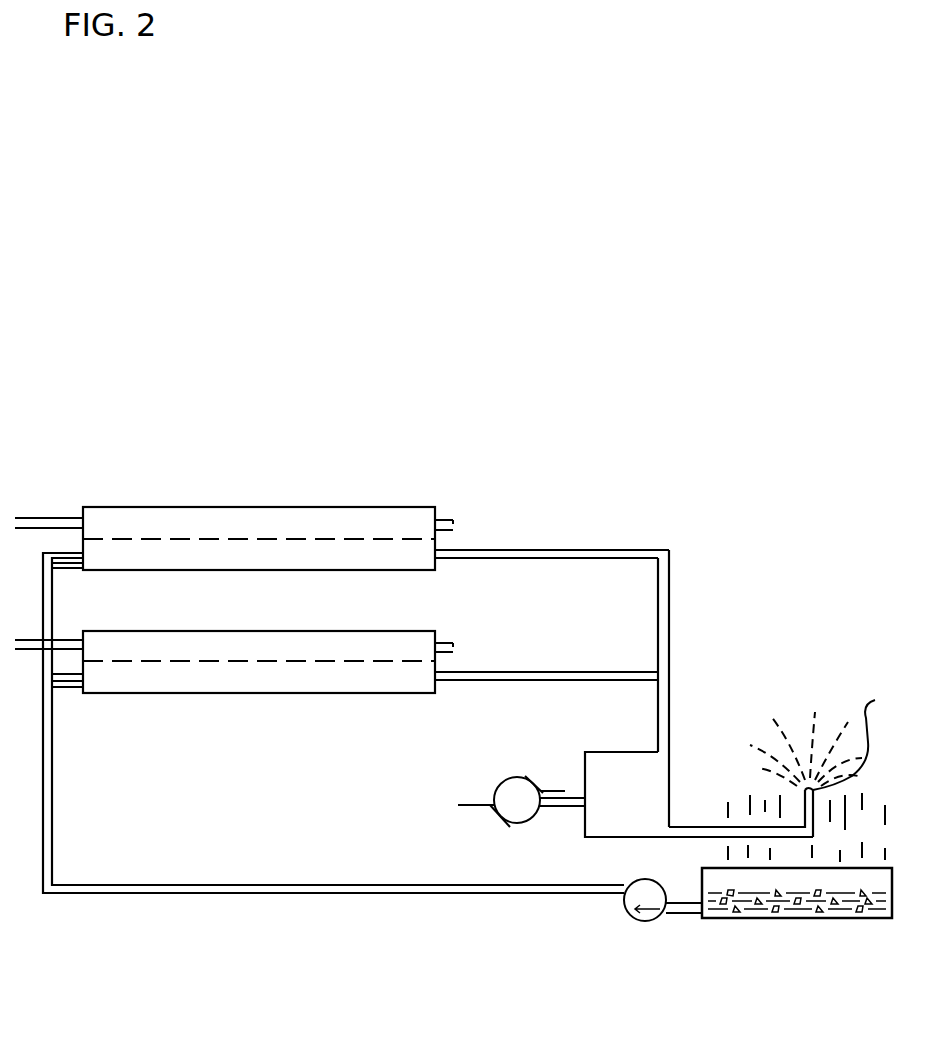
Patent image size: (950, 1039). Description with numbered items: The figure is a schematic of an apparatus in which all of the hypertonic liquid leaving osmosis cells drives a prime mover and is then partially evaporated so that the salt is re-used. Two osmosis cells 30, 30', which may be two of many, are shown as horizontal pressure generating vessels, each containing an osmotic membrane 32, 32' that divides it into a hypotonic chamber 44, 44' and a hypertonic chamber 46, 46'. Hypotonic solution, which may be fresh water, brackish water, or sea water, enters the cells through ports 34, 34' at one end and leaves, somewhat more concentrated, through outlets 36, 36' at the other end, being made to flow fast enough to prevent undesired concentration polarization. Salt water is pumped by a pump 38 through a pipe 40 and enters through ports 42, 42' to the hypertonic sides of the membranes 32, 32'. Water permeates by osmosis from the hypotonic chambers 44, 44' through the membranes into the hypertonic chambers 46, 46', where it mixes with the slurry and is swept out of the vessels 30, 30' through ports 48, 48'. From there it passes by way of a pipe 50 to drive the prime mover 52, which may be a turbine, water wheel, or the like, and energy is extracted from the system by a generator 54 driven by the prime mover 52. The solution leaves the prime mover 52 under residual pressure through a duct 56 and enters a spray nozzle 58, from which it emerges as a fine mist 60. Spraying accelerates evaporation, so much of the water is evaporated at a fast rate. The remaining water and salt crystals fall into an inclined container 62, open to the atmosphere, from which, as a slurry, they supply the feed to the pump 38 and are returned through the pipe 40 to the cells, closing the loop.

The osmosis cell 30 is at (259, 519).
The osmosis cell 30' is at (259, 689).
The osmotic membrane 32 is at (259, 504).
The osmotic membrane 32' is at (259, 701).
The port 34 is at (477, 499).
The port 34' is at (466, 621).
The outlet 36 is at (55, 495).
The outlet 36' is at (41, 670).
The pump 38 is at (647, 922).
The pipe 40 is at (312, 895).
The port 42 is at (82, 587).
The port 42' is at (83, 710).
The hypotonic chamber 44 is at (259, 499).
The hypotonic chamber 44' is at (259, 617).
The hypertonic chamber 46 is at (259, 583).
The hypertonic chamber 46' is at (259, 715).
The port 48 is at (552, 513).
The port 48' is at (546, 702).
The pipe 50 is at (670, 708).
The prime mover 52 is at (610, 752).
The generator 54 is at (503, 778).
The duct 56 is at (684, 822).
The spray nozzle 58 is at (852, 739).
The fine mist 60 is at (818, 705).
The inclined container 62 is at (797, 920).